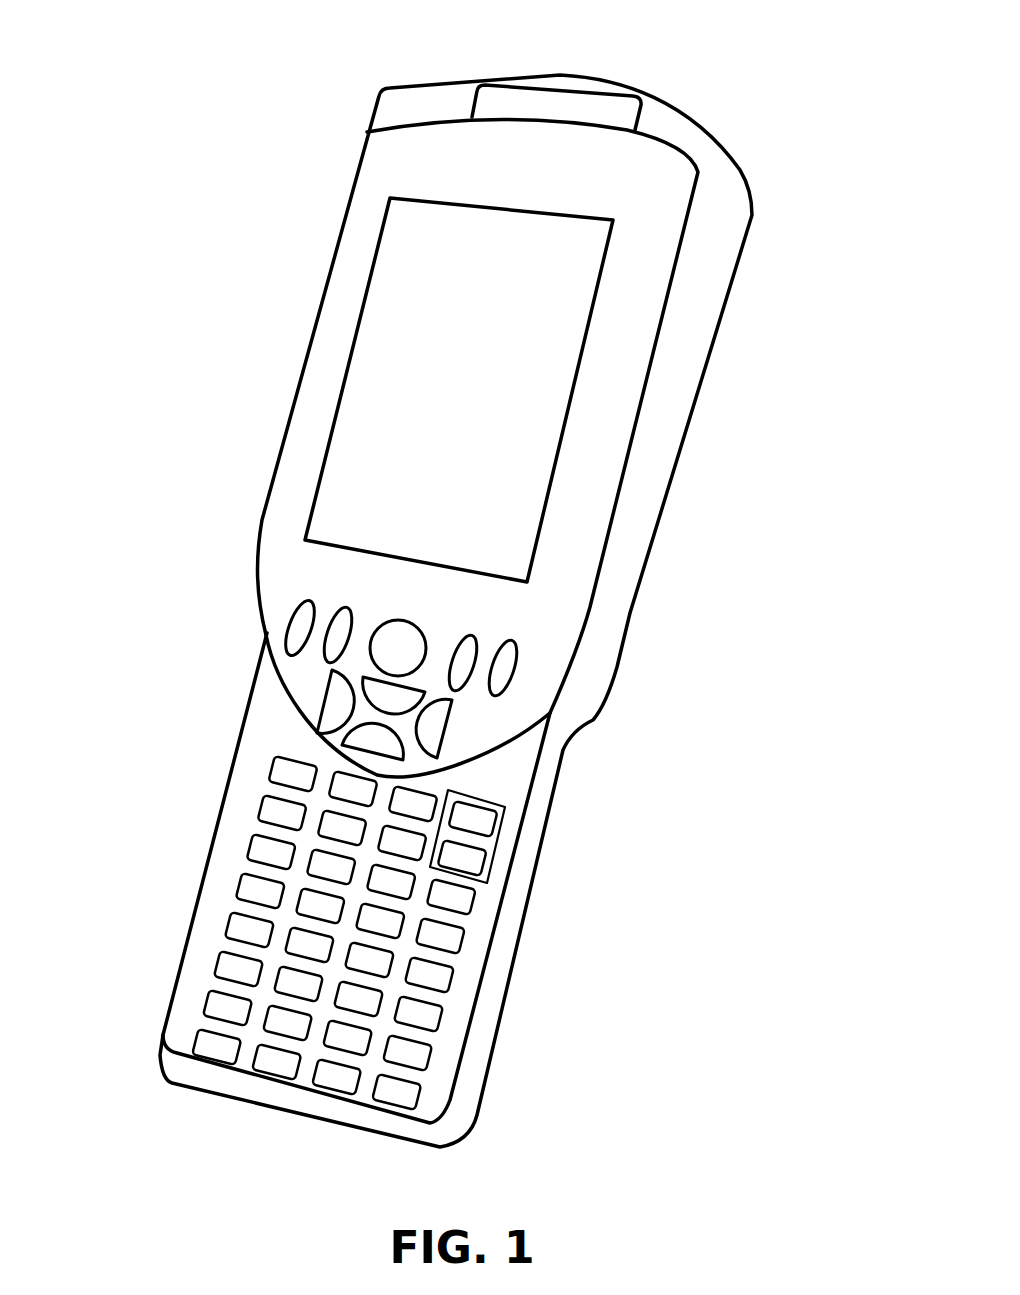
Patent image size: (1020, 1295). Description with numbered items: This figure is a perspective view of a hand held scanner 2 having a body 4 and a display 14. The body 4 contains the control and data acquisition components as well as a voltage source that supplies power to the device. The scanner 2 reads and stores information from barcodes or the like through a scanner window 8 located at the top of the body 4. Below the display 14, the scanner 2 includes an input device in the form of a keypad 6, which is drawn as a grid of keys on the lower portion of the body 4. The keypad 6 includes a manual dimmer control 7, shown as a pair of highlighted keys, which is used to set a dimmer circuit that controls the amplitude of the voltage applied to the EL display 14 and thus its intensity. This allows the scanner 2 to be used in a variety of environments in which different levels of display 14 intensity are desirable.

The hand held scanner 2 is at (468, 585).
The body 4 is at (693, 293).
The keypad 6 is at (347, 915).
The manual dimmer control 7 is at (497, 850).
The scanner window 8 is at (582, 102).
The display 14 is at (490, 377).